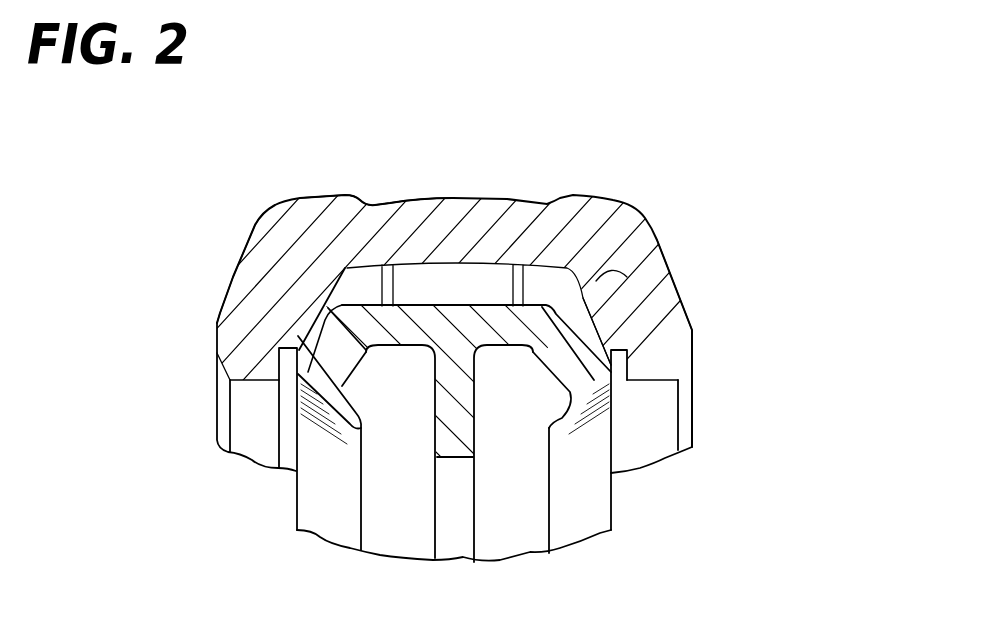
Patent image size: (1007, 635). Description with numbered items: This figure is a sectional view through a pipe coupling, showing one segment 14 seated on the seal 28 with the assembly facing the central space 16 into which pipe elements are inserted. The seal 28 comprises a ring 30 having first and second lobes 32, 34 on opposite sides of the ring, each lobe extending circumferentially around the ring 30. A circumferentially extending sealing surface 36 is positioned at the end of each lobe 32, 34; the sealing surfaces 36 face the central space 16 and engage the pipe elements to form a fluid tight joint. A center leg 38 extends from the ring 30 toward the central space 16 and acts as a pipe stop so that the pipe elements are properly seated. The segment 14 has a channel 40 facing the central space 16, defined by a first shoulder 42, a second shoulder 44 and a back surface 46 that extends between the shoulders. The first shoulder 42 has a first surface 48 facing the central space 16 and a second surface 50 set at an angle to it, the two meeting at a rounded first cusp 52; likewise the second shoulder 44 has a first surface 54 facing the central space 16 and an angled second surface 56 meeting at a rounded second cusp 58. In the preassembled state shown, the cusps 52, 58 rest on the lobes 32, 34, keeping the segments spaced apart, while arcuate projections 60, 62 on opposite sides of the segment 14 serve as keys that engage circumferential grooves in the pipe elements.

The second segment 14 is at (614, 200).
The central space 16 is at (436, 622).
The seal 28 is at (455, 310).
The ring 30 is at (459, 338).
The first lobe 32 is at (347, 352).
The second lobe 34 is at (548, 352).
The sealing surface 36 is at (555, 505).
The center leg 38 is at (438, 453).
The channel 40 is at (482, 270).
The first shoulder 42 is at (232, 278).
The second shoulder 44 is at (656, 275).
The back surface 46 is at (376, 212).
The first surface of first shoulder 48 is at (287, 364).
The second surface of first shoulder 50 is at (328, 288).
The first cusp 52 is at (307, 342).
The first surface of second shoulder 54 is at (617, 363).
The second surface of second shoulder 56 is at (593, 343).
The second cusp 58 is at (601, 346).
The arcuate projection 60 is at (252, 382).
The arcuate projection 62 is at (657, 414).